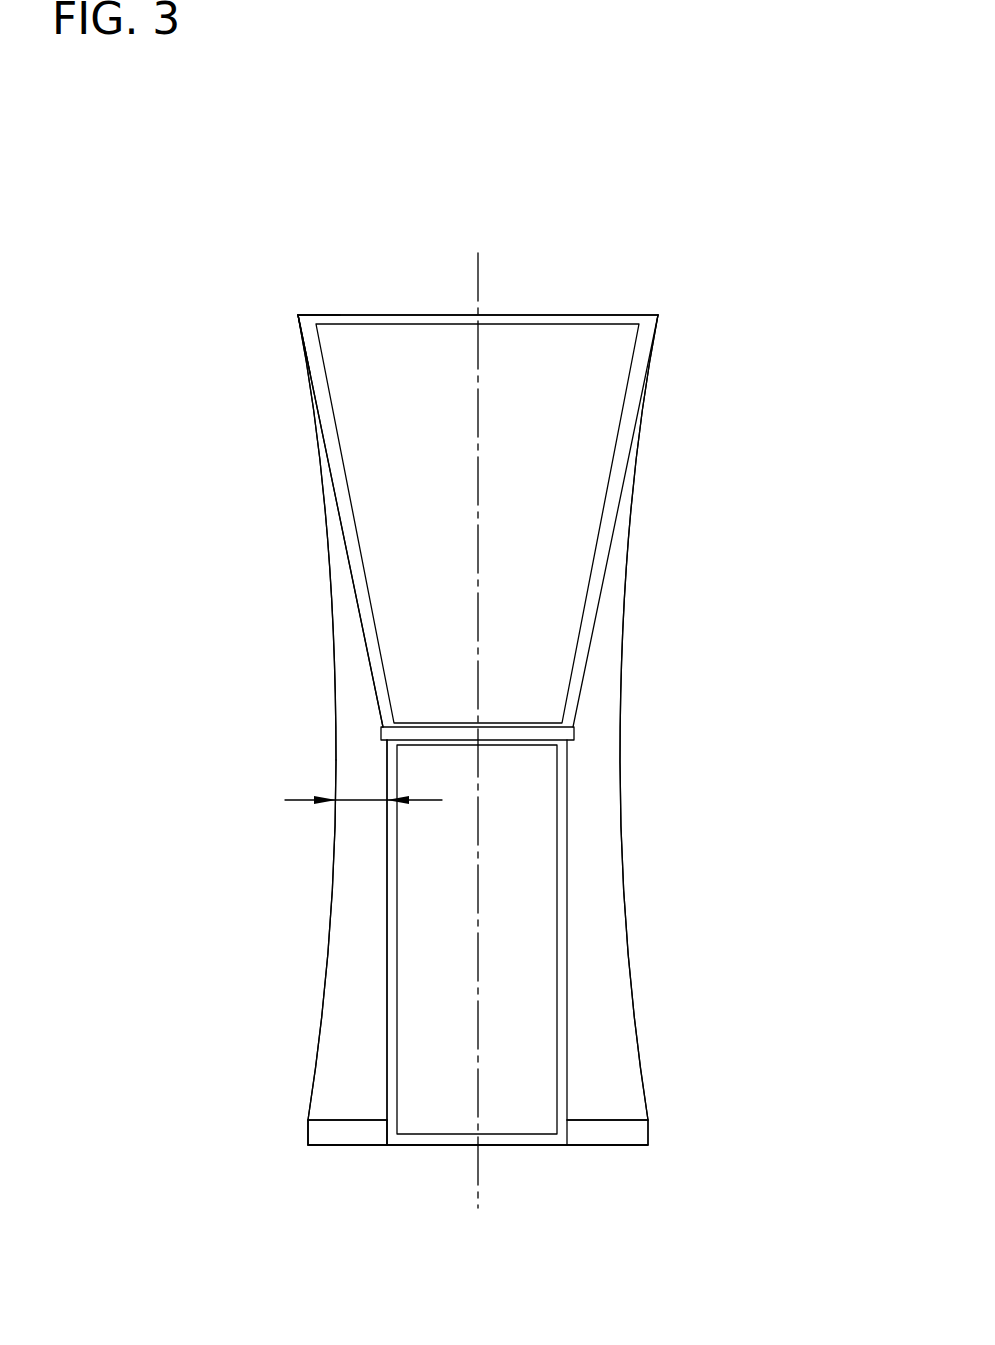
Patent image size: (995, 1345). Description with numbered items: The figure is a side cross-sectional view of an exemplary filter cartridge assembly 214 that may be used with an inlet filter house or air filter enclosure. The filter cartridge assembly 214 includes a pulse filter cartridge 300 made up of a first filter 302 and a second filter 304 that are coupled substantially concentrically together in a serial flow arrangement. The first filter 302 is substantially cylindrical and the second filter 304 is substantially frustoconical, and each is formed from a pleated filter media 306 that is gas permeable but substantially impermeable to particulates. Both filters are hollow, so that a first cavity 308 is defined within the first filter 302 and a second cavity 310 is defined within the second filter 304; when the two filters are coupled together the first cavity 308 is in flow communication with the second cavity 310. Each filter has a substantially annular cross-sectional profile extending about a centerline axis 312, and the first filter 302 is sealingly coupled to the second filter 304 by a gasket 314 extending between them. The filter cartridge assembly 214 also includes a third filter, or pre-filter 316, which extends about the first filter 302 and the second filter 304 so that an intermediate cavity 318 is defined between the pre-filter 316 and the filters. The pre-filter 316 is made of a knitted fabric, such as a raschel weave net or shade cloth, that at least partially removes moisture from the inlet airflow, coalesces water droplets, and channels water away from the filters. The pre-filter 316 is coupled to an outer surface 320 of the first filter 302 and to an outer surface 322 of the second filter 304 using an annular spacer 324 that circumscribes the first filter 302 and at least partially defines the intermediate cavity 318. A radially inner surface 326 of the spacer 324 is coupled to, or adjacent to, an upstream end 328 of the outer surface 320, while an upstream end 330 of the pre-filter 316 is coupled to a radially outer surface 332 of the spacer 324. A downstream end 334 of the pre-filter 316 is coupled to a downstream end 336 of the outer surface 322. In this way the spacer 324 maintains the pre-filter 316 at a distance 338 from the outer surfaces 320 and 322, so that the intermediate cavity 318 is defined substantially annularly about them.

The filter cartridge assembly 214 is at (192, 206).
The pulse filter cartridge 300 is at (626, 313).
The first filter 302 is at (568, 818).
The second filter 304 is at (590, 638).
The pleated filter media 306 is at (357, 561).
The first cavity 308 is at (544, 870).
The second cavity 310 is at (565, 465).
The centerline axis 312 is at (480, 266).
The gasket 314 is at (575, 733).
The pre-filter 316 is at (336, 742).
The intermediate cavity 318 is at (382, 968).
The outer surface of first filter 320 is at (387, 1010).
The outer surface of second filter 322 is at (372, 672).
The spacer 324 is at (325, 1148).
The radially inner surface of spacer 326 is at (388, 1142).
The upstream end of outer surface 328 is at (380, 1152).
The upstream end of pre-filter 330 is at (294, 1114).
The radially outer surface of spacer 332 is at (308, 1136).
The downstream end of pre-filter 334 is at (288, 331).
The downstream end of outer surface 336 is at (290, 318).
The distance 338 is at (358, 800).